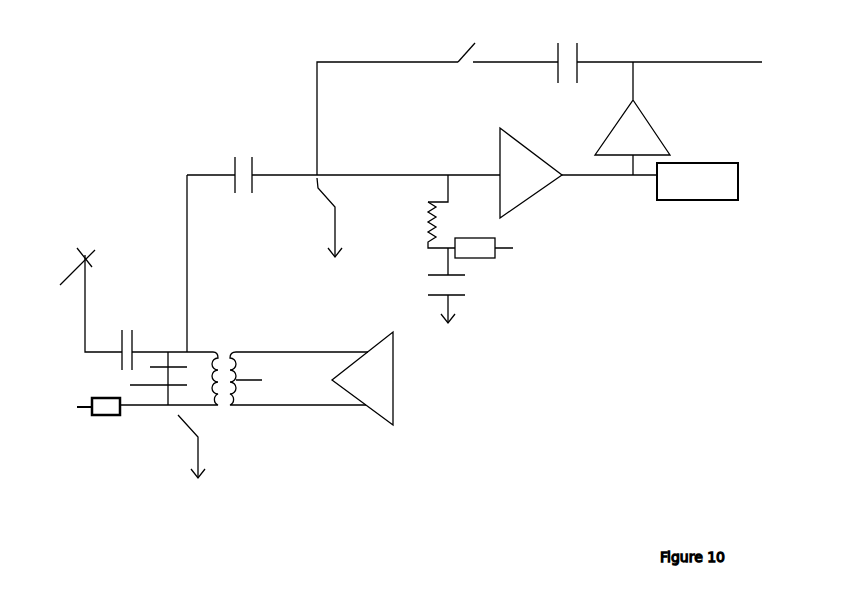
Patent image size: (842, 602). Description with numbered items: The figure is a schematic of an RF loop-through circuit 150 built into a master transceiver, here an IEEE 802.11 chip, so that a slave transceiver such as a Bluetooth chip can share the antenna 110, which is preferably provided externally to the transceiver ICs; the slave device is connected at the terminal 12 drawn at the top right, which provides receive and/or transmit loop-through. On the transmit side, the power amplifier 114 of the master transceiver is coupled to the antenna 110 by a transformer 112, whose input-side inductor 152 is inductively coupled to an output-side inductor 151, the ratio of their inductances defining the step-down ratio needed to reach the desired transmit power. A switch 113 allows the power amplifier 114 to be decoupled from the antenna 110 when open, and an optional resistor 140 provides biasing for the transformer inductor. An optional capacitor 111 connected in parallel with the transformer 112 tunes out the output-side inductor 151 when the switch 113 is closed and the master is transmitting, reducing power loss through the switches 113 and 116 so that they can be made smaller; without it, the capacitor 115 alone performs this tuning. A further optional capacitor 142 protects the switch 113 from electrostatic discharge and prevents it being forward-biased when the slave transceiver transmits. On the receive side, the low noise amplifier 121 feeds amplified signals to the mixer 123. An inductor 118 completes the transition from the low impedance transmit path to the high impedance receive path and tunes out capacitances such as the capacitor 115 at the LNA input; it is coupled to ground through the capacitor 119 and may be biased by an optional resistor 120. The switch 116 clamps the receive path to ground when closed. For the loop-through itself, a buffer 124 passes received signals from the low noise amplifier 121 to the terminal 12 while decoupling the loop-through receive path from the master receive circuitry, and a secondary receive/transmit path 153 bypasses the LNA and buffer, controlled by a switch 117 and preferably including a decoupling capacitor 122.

The terminal 12 is at (745, 40).
The antenna 110 is at (77, 300).
The capacitor 111 is at (150, 388).
The transformer 112 is at (232, 415).
The switch 113 is at (190, 437).
The power amplifier 114 is at (395, 388).
The capacitor 115 is at (240, 148).
The switch 116 is at (312, 200).
The switch 117 is at (463, 42).
The inductor 118 is at (422, 218).
The capacitor 119 is at (475, 290).
The resistor 120 is at (505, 260).
The low noise amplifier 121 is at (540, 198).
The decoupling capacitor 122 is at (573, 33).
The mixer 123 is at (680, 200).
The buffer 124 is at (663, 128).
The resistor 140 is at (90, 418).
The capacitor 142 is at (125, 325).
The RF loop-through circuit 150 is at (585, 350).
The output-side inductor 151 is at (217, 347).
The input-side inductor 152 is at (233, 370).
The secondary receive/transmit path 153 is at (385, 65).